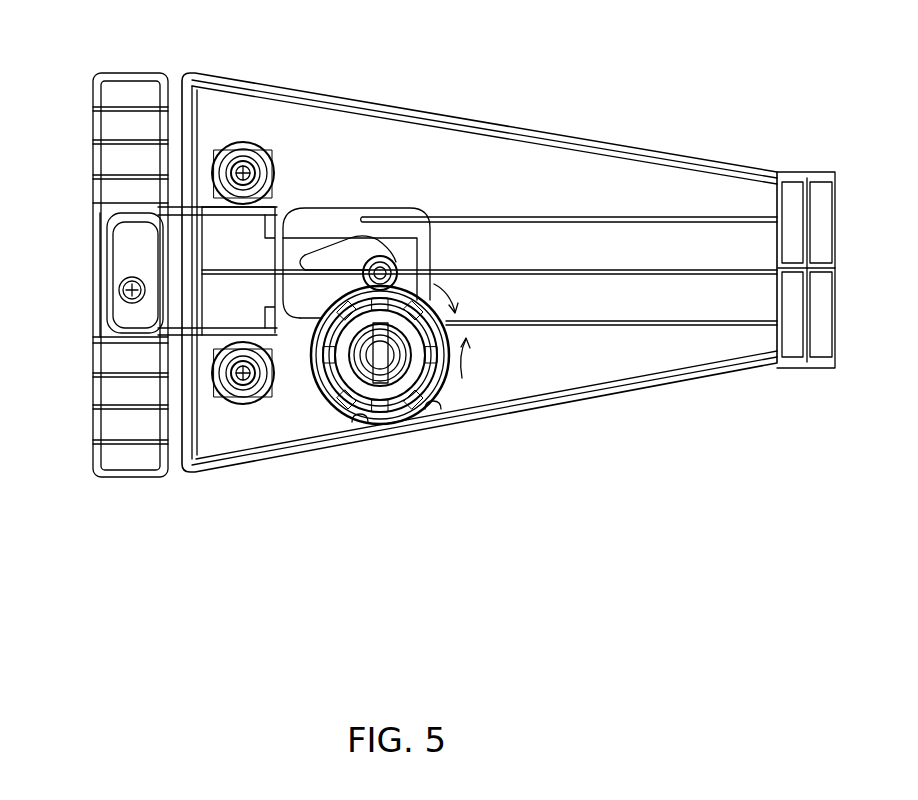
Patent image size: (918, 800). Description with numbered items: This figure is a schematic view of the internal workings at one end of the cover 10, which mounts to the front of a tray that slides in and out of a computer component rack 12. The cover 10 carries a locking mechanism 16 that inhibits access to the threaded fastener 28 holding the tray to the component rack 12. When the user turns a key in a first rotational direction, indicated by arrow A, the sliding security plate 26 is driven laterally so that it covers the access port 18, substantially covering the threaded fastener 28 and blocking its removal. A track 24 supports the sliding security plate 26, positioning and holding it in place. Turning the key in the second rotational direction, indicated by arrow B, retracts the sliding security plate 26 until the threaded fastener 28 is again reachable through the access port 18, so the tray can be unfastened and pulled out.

The cover 10 is at (432, 392).
The computer component rack 12 is at (348, 222).
The locking mechanism 16 is at (301, 352).
The access port 18 is at (150, 260).
The track 24 is at (173, 345).
The sliding security plate 26 is at (243, 257).
The threaded fastener 28 is at (118, 288).